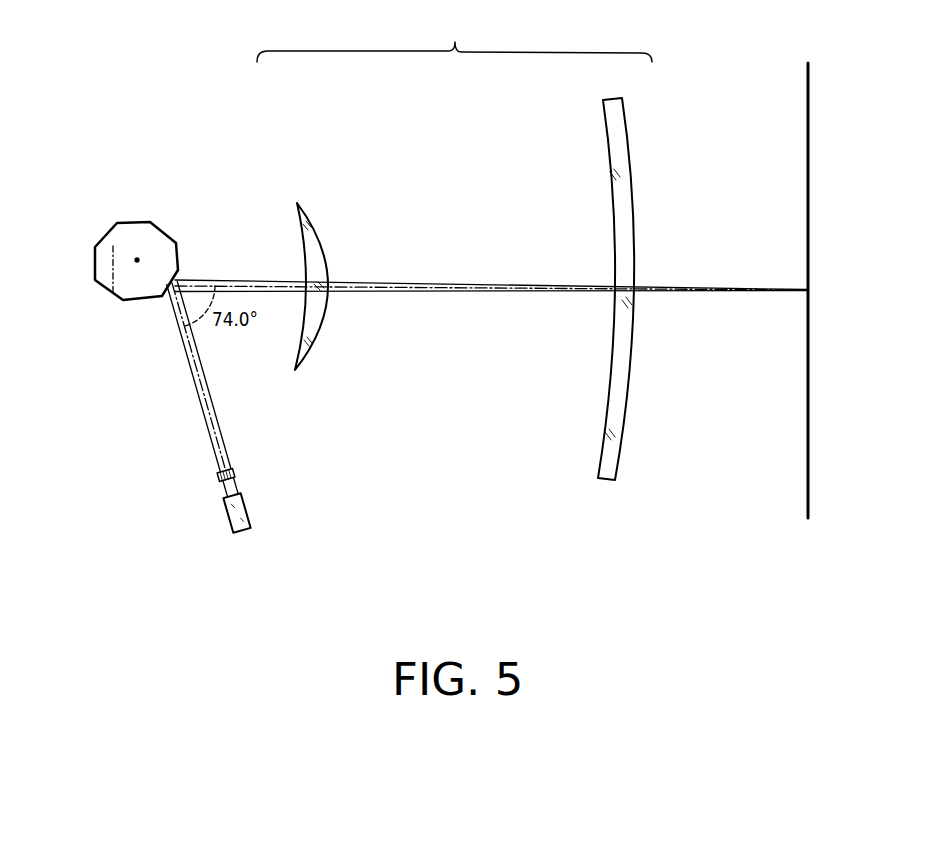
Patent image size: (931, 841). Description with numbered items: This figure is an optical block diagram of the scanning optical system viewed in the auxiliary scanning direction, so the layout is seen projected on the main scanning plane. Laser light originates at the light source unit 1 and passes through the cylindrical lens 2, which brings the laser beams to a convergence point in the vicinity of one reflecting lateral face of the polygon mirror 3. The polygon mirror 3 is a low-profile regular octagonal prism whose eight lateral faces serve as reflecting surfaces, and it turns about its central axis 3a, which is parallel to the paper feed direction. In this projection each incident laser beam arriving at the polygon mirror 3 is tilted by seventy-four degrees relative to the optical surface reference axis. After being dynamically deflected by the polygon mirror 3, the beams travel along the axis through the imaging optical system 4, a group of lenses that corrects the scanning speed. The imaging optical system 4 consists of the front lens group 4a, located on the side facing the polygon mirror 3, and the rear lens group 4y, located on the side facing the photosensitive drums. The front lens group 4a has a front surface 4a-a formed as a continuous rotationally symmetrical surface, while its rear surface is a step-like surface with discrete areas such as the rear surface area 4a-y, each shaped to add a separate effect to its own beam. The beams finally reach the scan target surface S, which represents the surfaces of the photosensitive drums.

The light source unit 1 is at (228, 521).
The cylindrical lens 2 is at (236, 474).
The polygon mirror 3 is at (130, 222).
The central axis 3a is at (136, 261).
The imaging optical system 4 is at (447, 247).
The front lens group 4a is at (304, 202).
The front surface 4a-a is at (294, 361).
The rear surface area 4a-y is at (320, 335).
The rear lens group 4y is at (600, 131).
The scan target surface S is at (808, 127).